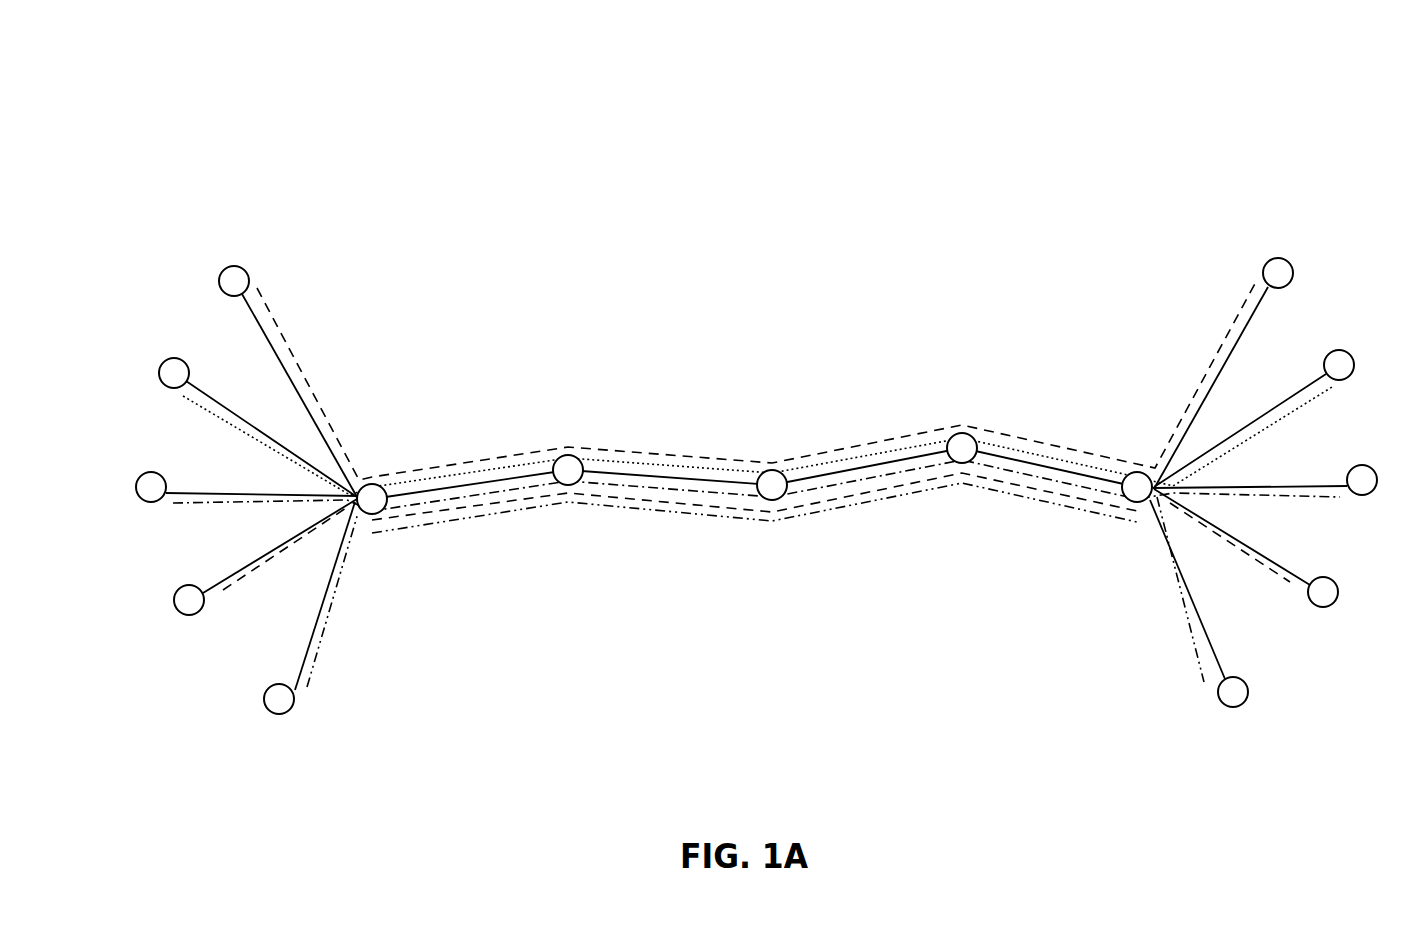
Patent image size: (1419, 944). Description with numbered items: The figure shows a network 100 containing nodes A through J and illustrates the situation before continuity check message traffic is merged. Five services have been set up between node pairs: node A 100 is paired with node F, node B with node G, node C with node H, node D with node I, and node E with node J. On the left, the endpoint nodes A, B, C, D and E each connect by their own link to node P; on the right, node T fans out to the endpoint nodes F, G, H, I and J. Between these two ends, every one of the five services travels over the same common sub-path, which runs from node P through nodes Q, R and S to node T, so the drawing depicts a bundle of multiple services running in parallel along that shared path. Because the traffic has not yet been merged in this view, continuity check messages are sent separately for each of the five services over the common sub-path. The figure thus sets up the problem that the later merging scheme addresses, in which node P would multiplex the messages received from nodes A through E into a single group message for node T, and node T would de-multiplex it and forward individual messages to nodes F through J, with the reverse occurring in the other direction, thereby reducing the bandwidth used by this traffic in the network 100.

The network 100 is at (396, 186).
The node A is at (219, 262).
The node B is at (153, 360).
The node C is at (125, 475).
The node D is at (158, 589).
The node E is at (254, 699).
The node P is at (379, 478).
The node Q is at (568, 445).
The node R is at (772, 462).
The node S is at (962, 425).
The node T is at (1137, 462).
The node F is at (1287, 243).
The node G is at (1357, 346).
The node H is at (1375, 459).
The node I is at (1342, 579).
The node J is at (1246, 701).